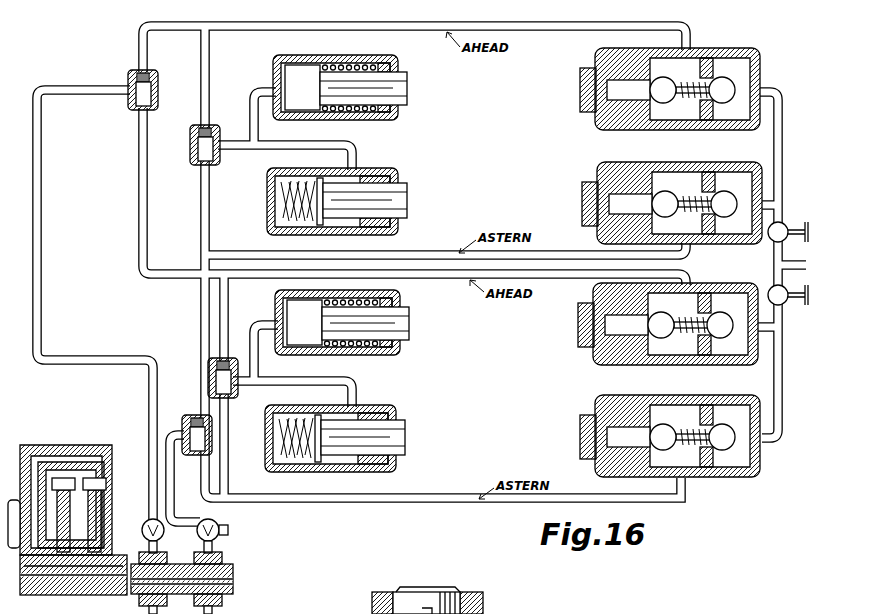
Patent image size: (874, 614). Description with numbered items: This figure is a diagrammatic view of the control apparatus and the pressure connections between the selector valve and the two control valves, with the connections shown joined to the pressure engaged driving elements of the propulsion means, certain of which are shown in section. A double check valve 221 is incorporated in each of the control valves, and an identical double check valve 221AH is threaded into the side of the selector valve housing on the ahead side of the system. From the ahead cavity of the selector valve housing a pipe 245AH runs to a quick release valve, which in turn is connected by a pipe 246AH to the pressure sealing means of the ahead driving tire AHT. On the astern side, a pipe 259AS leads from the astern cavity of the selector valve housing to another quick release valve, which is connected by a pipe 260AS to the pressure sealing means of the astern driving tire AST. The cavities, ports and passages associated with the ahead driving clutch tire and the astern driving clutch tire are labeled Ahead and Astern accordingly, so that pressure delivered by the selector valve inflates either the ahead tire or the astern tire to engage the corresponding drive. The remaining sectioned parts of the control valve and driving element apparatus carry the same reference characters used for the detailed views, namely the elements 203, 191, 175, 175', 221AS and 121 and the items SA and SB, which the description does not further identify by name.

The double check valve 221AH is at (126, 82).
The double check valve 221 is at (190, 136).
The astern tee fitting 221AS is at (209, 458).
The cylinder 203 is at (408, 86).
The spring-return cylinder 191 is at (408, 195).
The ball valve unit 175 is at (689, 206).
The ball valve unit 175' is at (671, 307).
The hand valve SA is at (794, 228).
The hand valve SB is at (794, 306).
The pipe 245AH is at (101, 357).
The pipe 259AS is at (172, 443).
The pipe 246AH is at (158, 546).
The pipe 260AS is at (215, 548).
The ahead driving tire AHT is at (62, 480).
The astern driving tire AST is at (95, 480).
The valve body 121 is at (372, 610).